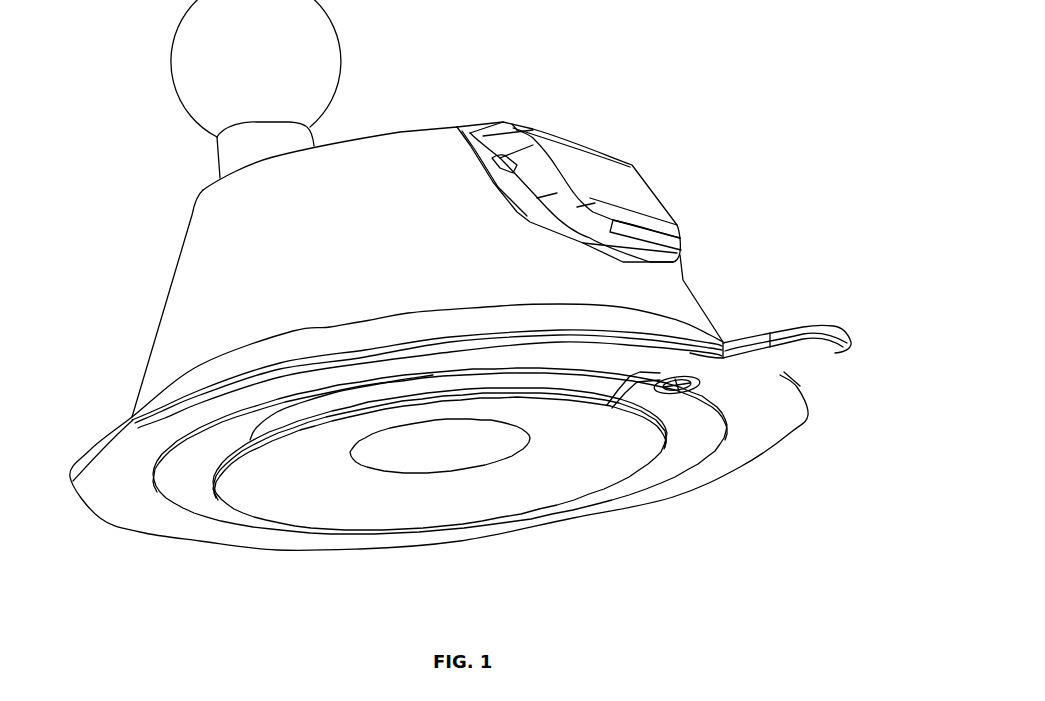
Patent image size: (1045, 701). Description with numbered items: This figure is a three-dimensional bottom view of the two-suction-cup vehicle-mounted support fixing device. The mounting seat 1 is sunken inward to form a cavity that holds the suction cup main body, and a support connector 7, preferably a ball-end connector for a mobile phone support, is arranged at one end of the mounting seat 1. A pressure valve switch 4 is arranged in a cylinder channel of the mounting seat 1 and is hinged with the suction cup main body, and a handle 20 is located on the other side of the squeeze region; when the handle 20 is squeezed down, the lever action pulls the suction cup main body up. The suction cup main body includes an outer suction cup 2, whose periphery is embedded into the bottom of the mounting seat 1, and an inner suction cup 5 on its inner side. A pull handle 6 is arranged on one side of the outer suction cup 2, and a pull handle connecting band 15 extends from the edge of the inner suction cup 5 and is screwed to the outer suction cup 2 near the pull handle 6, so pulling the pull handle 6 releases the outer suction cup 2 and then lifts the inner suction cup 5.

The mounting seat 1 is at (193, 290).
The outer suction cup 2 is at (123, 482).
The pressure valve switch 4 is at (515, 123).
The inner suction cup 5 is at (590, 472).
The pull handle 6 is at (822, 353).
The support connector 7 is at (198, 75).
The pull handle connecting band 15 is at (627, 400).
The handle 20 is at (627, 180).